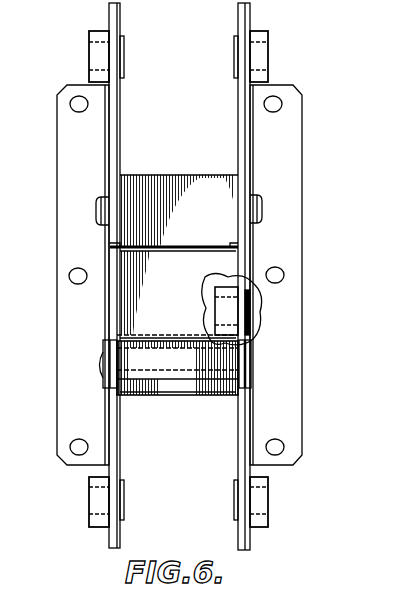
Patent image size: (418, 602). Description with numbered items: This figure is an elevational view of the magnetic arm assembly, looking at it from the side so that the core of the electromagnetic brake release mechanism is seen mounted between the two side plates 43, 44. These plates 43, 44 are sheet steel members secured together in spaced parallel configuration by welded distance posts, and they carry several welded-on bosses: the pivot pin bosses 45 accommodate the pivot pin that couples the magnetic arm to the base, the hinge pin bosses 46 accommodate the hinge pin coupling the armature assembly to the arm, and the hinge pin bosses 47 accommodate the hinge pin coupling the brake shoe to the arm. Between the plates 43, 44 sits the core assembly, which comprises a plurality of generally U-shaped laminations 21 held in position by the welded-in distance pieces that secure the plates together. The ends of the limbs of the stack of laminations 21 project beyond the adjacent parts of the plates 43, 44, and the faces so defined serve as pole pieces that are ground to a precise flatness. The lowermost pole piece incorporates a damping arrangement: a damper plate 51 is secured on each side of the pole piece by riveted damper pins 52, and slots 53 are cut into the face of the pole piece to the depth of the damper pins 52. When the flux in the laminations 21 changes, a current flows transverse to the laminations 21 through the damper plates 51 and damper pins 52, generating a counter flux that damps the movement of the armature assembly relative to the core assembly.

The U-shaped laminations 21 is at (124, 265).
The side plate 43 is at (240, 535).
The side plate 44 is at (109, 543).
The pivot pin bosses 45 is at (89, 494).
The hinge pin bosses 46 is at (89, 58).
The hinge pin bosses 47 is at (215, 290).
The damper plate 51 is at (103, 360).
The damper pins 52 is at (105, 342).
The slots 53 is at (165, 336).